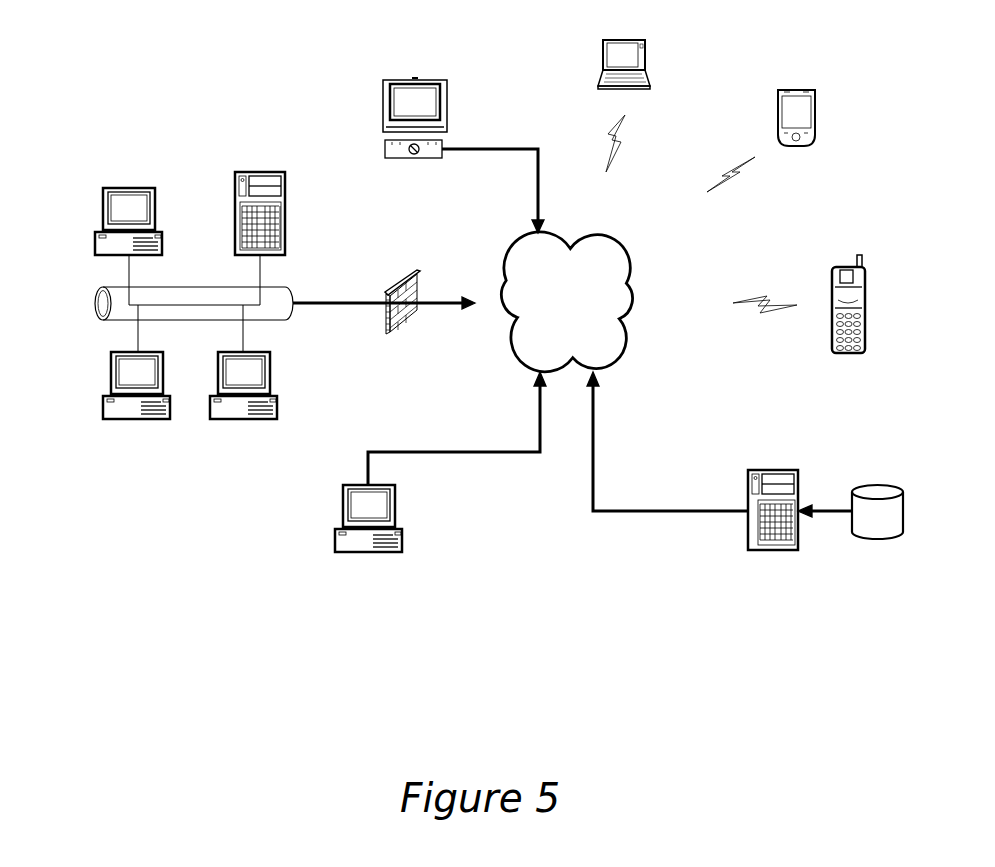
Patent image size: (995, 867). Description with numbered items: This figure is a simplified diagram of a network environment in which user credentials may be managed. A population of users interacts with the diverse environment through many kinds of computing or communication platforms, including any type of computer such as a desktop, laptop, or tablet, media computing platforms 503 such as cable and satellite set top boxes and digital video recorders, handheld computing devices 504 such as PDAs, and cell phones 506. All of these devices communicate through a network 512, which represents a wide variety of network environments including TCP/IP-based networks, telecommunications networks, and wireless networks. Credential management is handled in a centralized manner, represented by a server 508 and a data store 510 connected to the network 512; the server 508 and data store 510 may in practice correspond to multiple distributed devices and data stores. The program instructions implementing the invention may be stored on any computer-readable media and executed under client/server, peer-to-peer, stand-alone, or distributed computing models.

The media computing platform 503 is at (385, 147).
The handheld computing device 504 is at (778, 88).
The mobile telephone 506 is at (833, 268).
The server 508 is at (757, 470).
The data store 510 is at (880, 485).
The network 512 is at (512, 245).